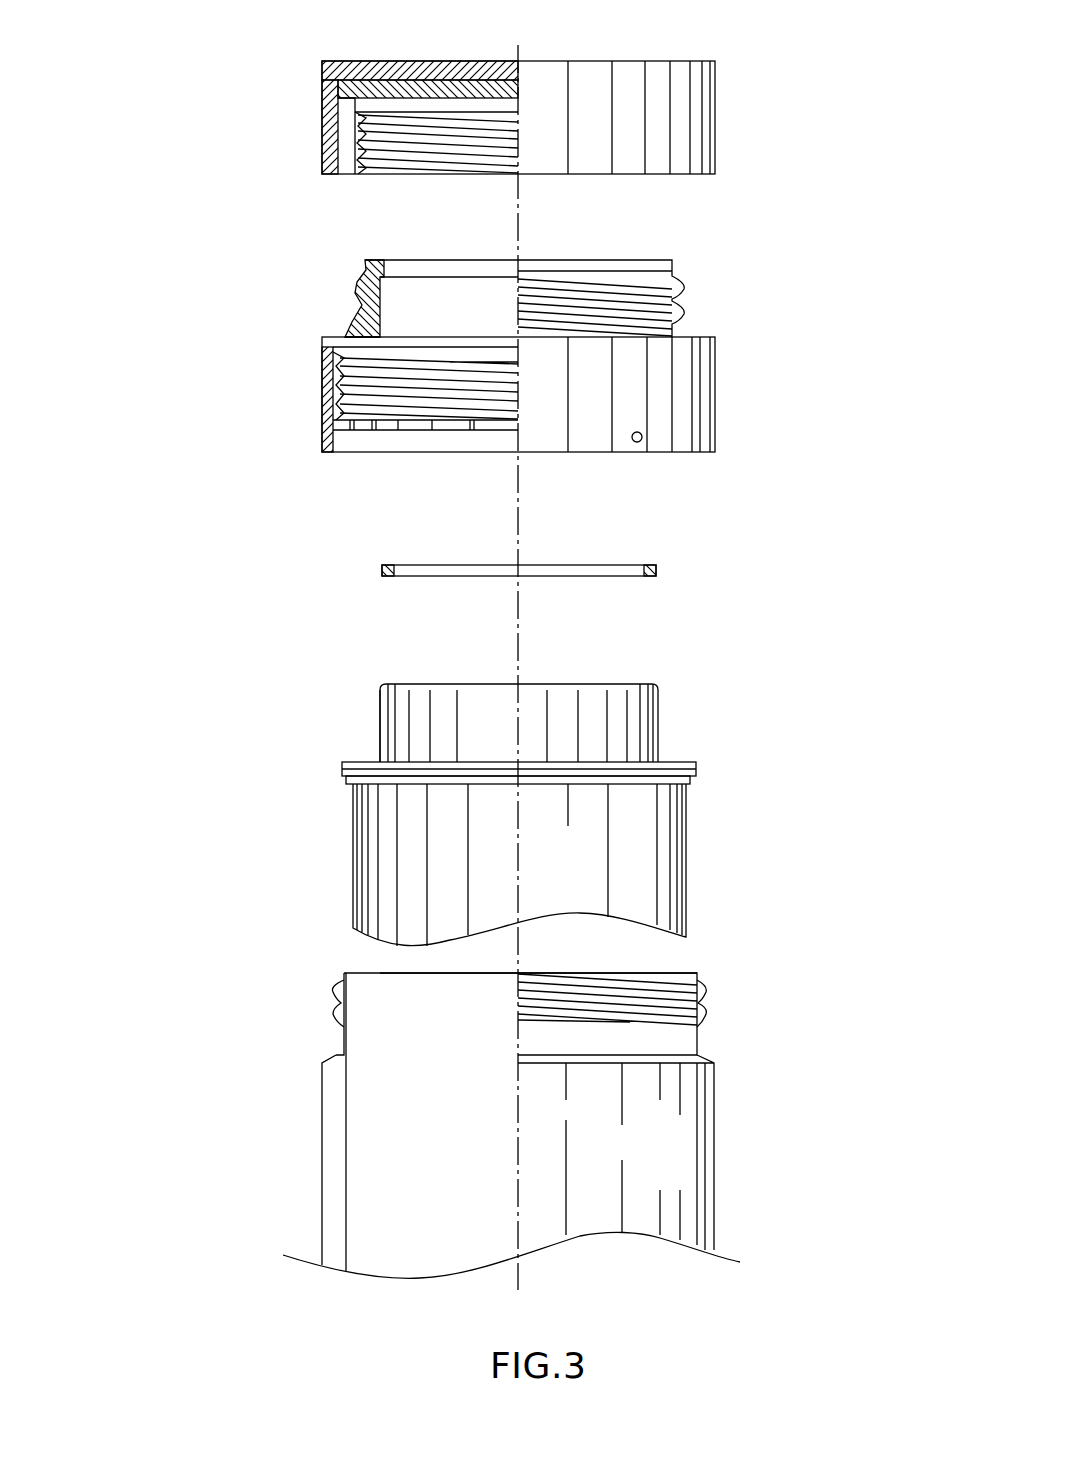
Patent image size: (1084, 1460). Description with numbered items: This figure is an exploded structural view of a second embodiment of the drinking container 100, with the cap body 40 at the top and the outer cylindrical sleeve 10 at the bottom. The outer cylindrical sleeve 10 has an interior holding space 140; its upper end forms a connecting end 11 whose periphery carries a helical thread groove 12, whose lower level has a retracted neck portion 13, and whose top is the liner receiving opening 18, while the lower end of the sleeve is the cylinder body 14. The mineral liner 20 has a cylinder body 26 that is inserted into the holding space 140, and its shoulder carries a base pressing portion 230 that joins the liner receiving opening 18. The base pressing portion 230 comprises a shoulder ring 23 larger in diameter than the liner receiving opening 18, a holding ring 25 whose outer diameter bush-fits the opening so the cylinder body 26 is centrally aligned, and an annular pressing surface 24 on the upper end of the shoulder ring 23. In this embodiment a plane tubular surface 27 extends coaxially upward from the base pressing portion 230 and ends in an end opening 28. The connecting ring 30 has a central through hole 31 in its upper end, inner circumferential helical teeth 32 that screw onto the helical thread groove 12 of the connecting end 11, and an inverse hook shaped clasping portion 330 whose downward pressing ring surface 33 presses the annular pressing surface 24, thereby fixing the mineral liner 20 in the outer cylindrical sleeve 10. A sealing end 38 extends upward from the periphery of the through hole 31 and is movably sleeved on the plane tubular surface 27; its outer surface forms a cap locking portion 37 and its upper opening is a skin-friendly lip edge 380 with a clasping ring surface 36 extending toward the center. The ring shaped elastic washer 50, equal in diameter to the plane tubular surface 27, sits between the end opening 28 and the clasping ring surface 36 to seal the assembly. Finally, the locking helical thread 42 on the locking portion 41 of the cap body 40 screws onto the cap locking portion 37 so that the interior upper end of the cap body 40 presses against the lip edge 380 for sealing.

The outer cylindrical sleeve 10 is at (768, 1010).
The connecting end 11 is at (290, 975).
The helical thread groove 12 is at (332, 1000).
The neck portion 13 is at (597, 1040).
The cylinder body 14 is at (285, 1158).
The liner receiving opening 18 is at (468, 975).
The holding space 140 is at (450, 1217).
The mineral liner 20 is at (768, 707).
The shoulder ring 23 is at (696, 770).
The annular pressing surface 24 is at (686, 762).
The holding ring 25 is at (688, 782).
The cylinder body 26 is at (352, 848).
The plane tubular surface 27 is at (382, 720).
The end opening 28 is at (597, 682).
The base pressing portion 230 is at (335, 758).
The connecting ring 30 is at (273, 390).
The through hole 31 is at (398, 338).
The helical teeth 32 is at (400, 378).
The downward pressing ring surface 33 is at (340, 408).
The clasping ring surface 36 is at (388, 284).
The cap locking portion 37 is at (358, 298).
The sealing end 38 is at (265, 278).
The clasping portion 330 is at (495, 358).
The lip edge 380 is at (622, 265).
The cap body 40 is at (300, 107).
The locking portion 41 is at (413, 118).
The locking helical thread 42 is at (463, 112).
The elastic washer 50 is at (695, 555).
The container assembly 100 is at (258, 600).